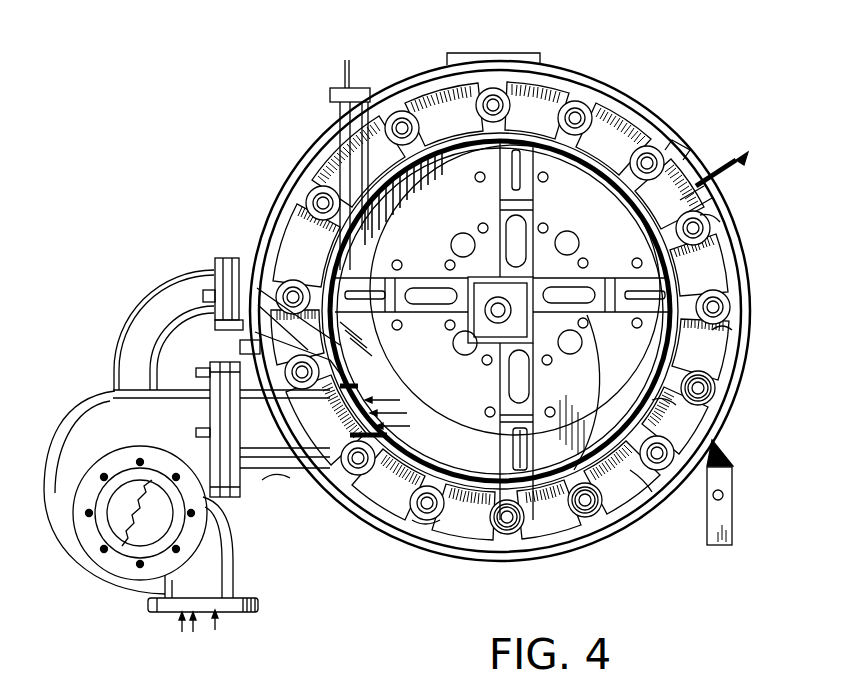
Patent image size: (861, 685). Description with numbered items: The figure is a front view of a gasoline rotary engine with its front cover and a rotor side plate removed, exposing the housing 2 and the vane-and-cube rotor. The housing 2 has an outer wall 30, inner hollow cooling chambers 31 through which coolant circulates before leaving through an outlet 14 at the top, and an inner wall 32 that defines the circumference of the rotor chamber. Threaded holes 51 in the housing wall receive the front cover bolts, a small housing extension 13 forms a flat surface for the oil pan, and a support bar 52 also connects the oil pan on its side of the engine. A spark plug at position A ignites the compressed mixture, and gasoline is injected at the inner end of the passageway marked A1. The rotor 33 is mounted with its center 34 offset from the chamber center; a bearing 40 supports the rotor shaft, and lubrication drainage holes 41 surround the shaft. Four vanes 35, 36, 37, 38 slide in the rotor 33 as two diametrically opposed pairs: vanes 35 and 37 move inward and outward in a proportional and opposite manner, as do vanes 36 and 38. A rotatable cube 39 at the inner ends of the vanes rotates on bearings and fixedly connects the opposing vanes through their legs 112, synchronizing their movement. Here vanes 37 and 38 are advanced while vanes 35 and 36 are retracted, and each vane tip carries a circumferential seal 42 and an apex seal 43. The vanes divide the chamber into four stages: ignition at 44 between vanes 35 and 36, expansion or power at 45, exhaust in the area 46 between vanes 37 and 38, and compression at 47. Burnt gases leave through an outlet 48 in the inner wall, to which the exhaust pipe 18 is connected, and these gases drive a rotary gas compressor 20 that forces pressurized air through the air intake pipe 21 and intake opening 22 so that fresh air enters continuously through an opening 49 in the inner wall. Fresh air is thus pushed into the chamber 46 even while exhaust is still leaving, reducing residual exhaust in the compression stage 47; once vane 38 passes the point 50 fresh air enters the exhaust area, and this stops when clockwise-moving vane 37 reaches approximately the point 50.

The housing 2 is at (552, 62).
The housing extension 13 is at (426, 540).
The outlet 14 is at (540, 55).
The exhaust pipe 18 is at (223, 417).
The rotary gas compressor 20 is at (137, 530).
The air intake pipe 21 is at (165, 272).
The intake opening 22 is at (228, 258).
The outer wall 30 is at (598, 80).
The inner hollow cooling chambers 31 is at (612, 125).
The inner wall 32 is at (588, 150).
The rotor 33 is at (635, 343).
The center of the rotor 34 is at (578, 273).
The vane 35 is at (565, 75).
The vane 36 is at (643, 482).
The vane 37 is at (592, 507).
The vane 38 is at (445, 85).
The rotatable cube 39 is at (722, 327).
The bearing 40 is at (716, 216).
The lubrication drainage holes 41 is at (702, 165).
The circumferential seal 42 is at (496, 537).
The apex seal 43 is at (540, 527).
The ignition stage 44 is at (706, 192).
The expansion or power stage 45 is at (665, 402).
The chamber 46 is at (370, 512).
The compression stage 47 is at (272, 210).
The outlet 48 is at (310, 472).
The opening 49 is at (243, 347).
The point 50 is at (282, 482).
The holes 51 is at (704, 390).
The support bar 52 is at (733, 545).
The legs 112 is at (513, 310).
The spark plug position A is at (725, 168).
The fuel injection passageway A1 is at (345, 60).